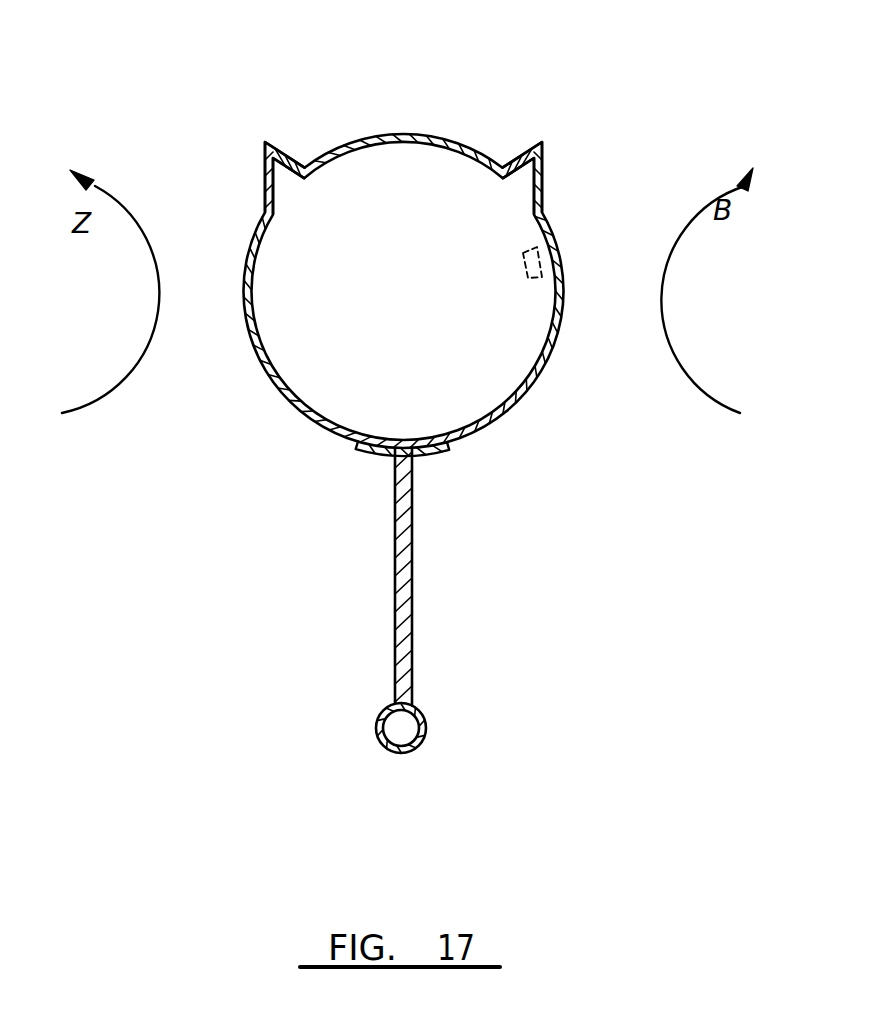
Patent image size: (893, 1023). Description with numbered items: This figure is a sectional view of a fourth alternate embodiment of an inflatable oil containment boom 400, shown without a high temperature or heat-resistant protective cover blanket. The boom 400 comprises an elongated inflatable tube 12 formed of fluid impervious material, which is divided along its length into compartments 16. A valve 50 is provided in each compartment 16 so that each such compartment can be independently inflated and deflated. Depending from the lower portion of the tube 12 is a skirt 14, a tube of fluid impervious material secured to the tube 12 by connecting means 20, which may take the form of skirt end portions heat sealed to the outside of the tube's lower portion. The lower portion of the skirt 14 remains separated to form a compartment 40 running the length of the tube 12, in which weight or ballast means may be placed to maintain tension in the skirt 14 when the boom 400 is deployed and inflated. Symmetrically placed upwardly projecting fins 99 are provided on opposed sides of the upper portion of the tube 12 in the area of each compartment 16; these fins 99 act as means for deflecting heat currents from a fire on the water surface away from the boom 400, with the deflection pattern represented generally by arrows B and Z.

The boom 400 is at (460, 103).
The tube 12 is at (267, 356).
The skirt 14 is at (412, 557).
The compartment 16 is at (427, 315).
The connecting means 20 is at (440, 475).
The compartment 40 is at (424, 716).
The valve 50 is at (540, 277).
The projecting fins 99 is at (277, 152).